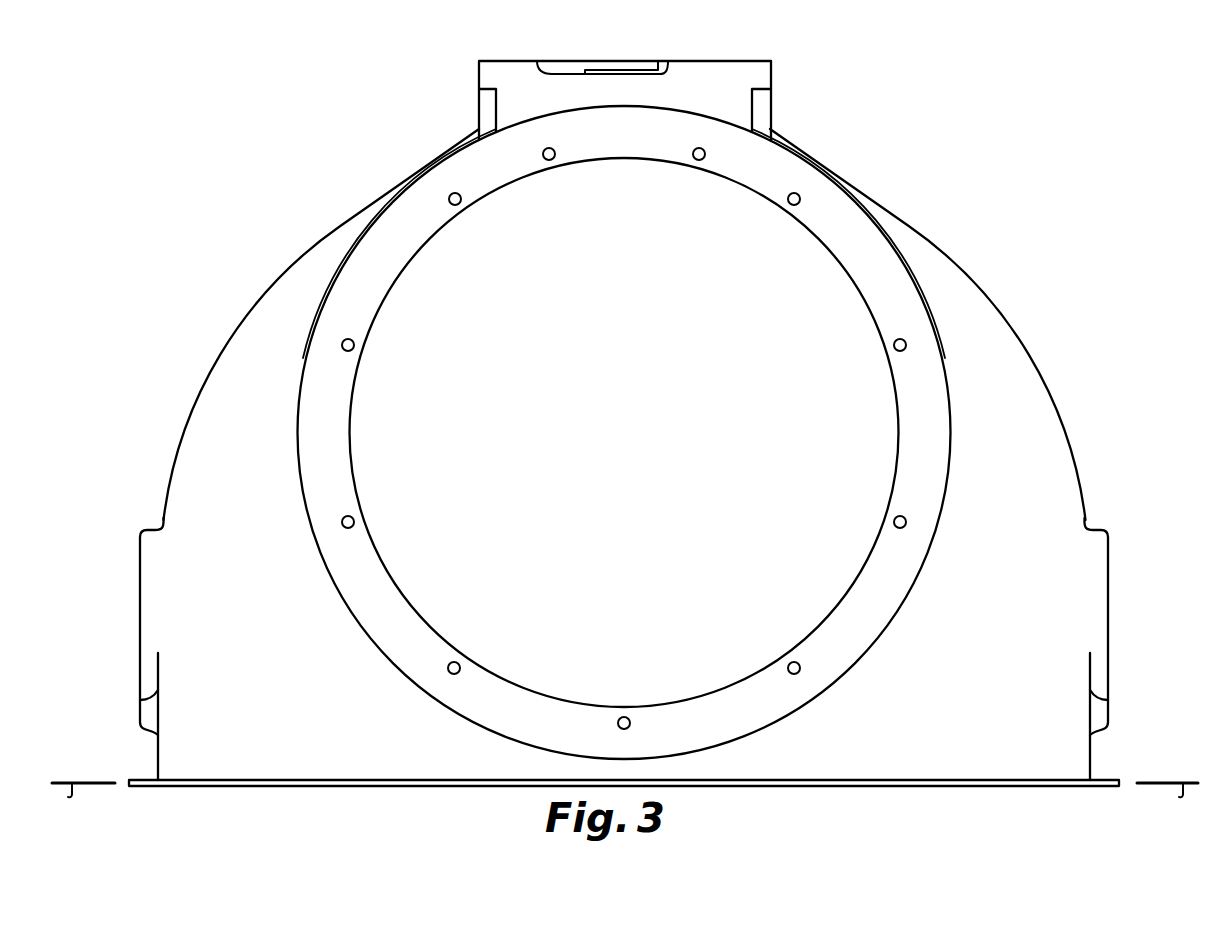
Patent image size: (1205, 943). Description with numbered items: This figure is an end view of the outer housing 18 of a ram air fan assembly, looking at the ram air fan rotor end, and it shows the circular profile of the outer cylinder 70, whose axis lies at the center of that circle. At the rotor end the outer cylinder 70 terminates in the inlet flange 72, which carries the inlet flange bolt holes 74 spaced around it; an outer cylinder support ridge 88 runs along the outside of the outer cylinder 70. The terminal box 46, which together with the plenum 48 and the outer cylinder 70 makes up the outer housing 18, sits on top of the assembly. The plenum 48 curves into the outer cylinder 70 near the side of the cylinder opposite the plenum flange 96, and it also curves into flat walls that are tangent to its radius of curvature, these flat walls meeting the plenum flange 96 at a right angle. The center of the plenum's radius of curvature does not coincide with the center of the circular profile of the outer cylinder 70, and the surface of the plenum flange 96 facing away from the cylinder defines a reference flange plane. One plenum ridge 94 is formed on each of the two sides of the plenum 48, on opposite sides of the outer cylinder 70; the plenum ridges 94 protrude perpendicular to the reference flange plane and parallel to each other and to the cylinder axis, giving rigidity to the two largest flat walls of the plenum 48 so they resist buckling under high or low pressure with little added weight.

The outer housing 18 is at (226, 135).
The terminal box 46 is at (740, 61).
The plenum 48 is at (975, 270).
The outer cylinder 70 is at (341, 630).
The inlet flange 72 is at (526, 722).
The inlet flange bolt holes 74 is at (788, 665).
The outer cylinder support ridge 88 is at (815, 150).
The plenum ridges 94 is at (140, 644).
The plenum flange 96 is at (1107, 780).